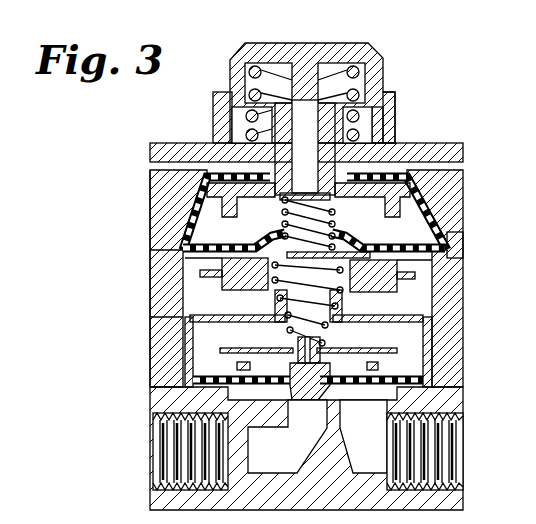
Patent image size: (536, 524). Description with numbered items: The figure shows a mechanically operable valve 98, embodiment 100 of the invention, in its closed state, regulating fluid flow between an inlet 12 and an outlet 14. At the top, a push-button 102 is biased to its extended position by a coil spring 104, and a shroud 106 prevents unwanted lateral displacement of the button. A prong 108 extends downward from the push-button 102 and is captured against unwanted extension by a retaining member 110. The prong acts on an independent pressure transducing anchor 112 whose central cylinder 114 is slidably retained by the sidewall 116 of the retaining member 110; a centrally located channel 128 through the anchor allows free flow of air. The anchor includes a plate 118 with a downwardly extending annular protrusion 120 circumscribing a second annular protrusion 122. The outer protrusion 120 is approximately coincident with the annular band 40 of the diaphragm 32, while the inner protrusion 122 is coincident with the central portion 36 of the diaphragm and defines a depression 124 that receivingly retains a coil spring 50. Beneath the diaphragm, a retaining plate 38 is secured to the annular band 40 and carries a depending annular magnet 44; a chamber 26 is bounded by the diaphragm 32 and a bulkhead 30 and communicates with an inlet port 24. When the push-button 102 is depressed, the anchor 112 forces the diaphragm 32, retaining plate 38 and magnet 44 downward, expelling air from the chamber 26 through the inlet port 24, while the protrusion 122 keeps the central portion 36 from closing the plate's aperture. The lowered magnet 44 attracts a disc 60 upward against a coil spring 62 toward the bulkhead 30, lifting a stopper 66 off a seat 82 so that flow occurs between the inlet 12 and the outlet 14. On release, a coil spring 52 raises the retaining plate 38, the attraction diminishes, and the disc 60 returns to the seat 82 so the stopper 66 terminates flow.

The inlet 12 is at (446, 423).
The outlet 14 is at (160, 430).
The inlet port 24 is at (168, 290).
The chamber 26 is at (448, 287).
The bulkhead 30 is at (432, 325).
The diaphragm 32 is at (214, 236).
The central portion 36 is at (276, 245).
The retaining plate 38 is at (378, 282).
The annular band 40 is at (452, 268).
The annular magnet 44 is at (387, 285).
The coil spring 50 is at (338, 240).
The coil spring 52 is at (270, 296).
The disc 60 is at (364, 340).
The coil spring 62 is at (292, 334).
The stopper 66 is at (322, 330).
The seat 82 is at (305, 400).
The valve 98 is at (135, 215).
The embodiment 100 is at (95, 280).
The push-button 102 is at (380, 60).
The coil spring 104 is at (262, 70).
The shroud 106 is at (397, 100).
The prong 108 is at (308, 60).
The retaining member 110 is at (350, 75).
The pressure transducing anchor 112 is at (418, 150).
The central cylinder 114 is at (252, 128).
The sidewall 116 is at (388, 130).
The plate 118 is at (432, 185).
The annular protrusion 120 is at (436, 215).
The annular protrusion 122 is at (327, 195).
The depression 124 is at (325, 222).
The channel 128 is at (225, 155).